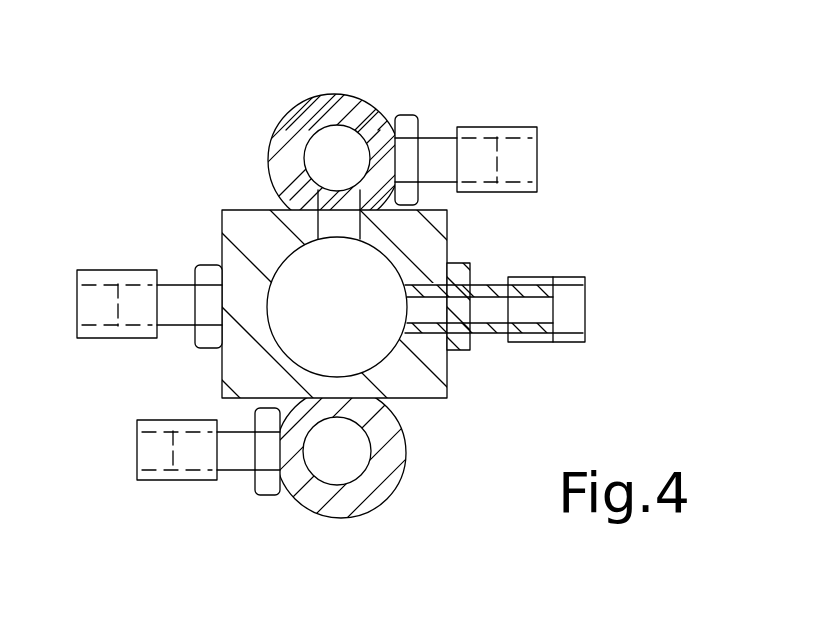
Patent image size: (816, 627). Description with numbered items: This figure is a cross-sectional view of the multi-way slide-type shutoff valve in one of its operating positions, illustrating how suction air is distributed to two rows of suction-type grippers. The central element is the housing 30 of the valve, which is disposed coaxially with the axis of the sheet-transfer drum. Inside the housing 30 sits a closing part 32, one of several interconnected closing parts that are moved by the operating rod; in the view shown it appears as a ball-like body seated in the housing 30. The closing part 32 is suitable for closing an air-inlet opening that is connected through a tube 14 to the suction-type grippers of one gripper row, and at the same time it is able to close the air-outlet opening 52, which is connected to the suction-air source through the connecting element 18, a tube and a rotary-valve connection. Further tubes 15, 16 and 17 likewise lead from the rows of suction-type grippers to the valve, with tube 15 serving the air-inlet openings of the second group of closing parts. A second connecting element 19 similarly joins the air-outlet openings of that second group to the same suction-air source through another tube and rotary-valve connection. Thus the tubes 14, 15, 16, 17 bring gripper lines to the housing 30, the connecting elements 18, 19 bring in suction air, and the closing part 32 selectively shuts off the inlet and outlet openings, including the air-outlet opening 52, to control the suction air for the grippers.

The tube 14 is at (544, 282).
The tube 15 is at (102, 278).
The tube 16 is at (503, 130).
The tube 17 is at (163, 482).
The connecting element 18 is at (340, 103).
The connecting element 19 is at (340, 507).
The housing 30 is at (240, 233).
The closing part 32 is at (288, 345).
The air-outlet opening 52 is at (303, 240).